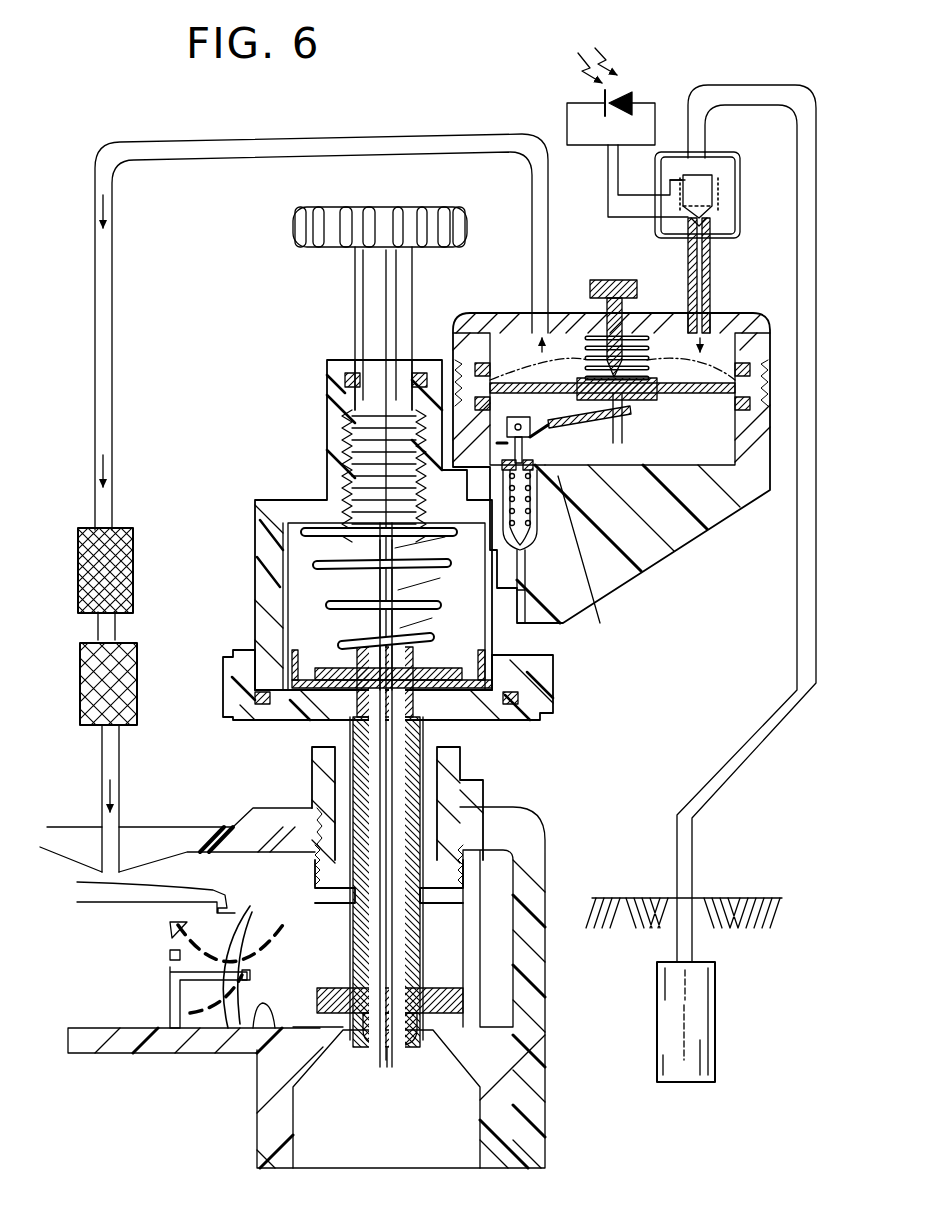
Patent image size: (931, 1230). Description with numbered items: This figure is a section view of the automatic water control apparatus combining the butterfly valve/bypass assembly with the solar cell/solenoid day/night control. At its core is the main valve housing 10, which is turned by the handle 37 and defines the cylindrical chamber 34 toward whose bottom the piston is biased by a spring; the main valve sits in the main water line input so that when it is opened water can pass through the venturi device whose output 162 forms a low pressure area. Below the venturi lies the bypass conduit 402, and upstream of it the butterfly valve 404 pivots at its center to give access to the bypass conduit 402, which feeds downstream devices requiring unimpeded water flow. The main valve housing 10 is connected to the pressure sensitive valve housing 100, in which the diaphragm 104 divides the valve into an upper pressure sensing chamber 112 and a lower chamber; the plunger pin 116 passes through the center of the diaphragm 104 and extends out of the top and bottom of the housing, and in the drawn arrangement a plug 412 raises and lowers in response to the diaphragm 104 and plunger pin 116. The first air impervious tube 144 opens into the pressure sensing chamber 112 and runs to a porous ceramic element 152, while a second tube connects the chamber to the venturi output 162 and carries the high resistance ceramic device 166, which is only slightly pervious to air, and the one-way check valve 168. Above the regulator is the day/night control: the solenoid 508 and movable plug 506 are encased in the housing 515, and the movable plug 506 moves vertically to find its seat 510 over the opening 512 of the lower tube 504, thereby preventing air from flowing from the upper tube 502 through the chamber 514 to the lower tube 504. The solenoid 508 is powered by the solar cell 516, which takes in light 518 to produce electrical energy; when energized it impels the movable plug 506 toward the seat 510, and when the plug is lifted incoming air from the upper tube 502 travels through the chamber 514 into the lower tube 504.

The main valve housing 10 is at (270, 476).
The cylindrical chamber 34 is at (322, 646).
The handle 37 is at (313, 250).
The pressure sensitive valve housing 100 is at (494, 310).
The diaphragm 104 is at (700, 393).
The upper pressure sensing chamber 112 is at (612, 330).
The plunger pin 116 is at (622, 432).
The first air impervious tube 144 is at (787, 538).
The porous ceramic element 152 is at (684, 990).
The output of venturi device 162 is at (213, 879).
The high resistance ceramic device 166 is at (137, 596).
The one-way check valve 168 is at (141, 700).
The bypass conduit 402 is at (129, 976).
The butterfly valve 404 is at (253, 975).
The plug 412 is at (530, 553).
The upper tube 502 is at (706, 140).
The lower tube 504 is at (711, 275).
The movable plug 506 is at (698, 218).
The solenoid 508 is at (718, 212).
The seat 510 is at (690, 220).
The opening of the lower tube 512 is at (703, 242).
The chamber 514 is at (685, 168).
The housing 515 is at (739, 152).
The solar cell 516 is at (574, 148).
The light 518 is at (570, 50).